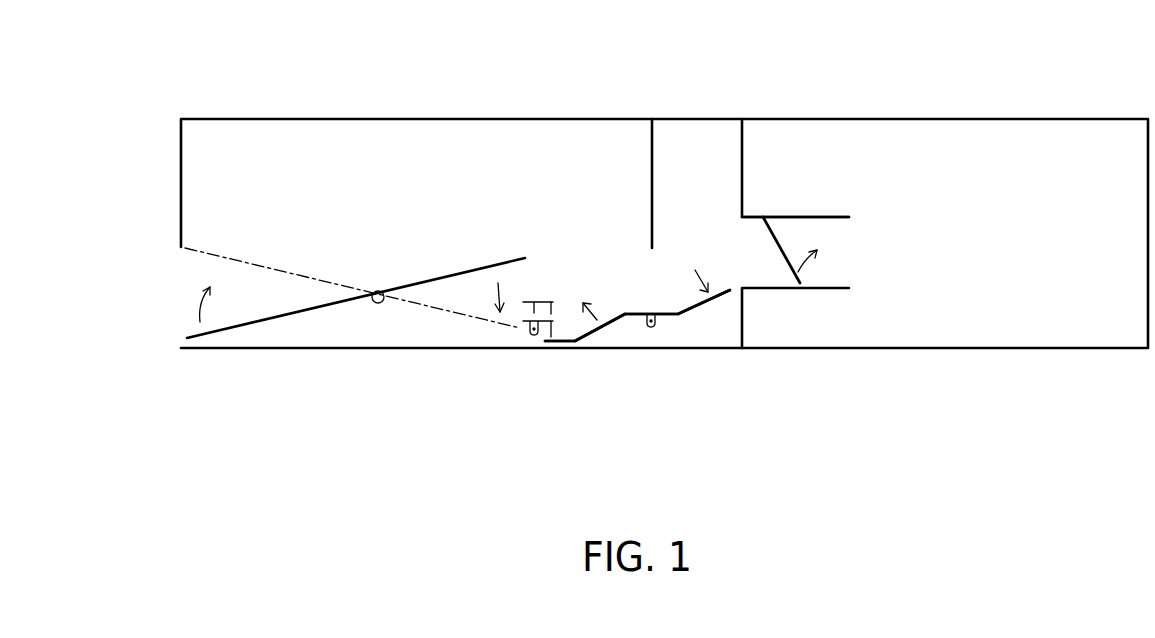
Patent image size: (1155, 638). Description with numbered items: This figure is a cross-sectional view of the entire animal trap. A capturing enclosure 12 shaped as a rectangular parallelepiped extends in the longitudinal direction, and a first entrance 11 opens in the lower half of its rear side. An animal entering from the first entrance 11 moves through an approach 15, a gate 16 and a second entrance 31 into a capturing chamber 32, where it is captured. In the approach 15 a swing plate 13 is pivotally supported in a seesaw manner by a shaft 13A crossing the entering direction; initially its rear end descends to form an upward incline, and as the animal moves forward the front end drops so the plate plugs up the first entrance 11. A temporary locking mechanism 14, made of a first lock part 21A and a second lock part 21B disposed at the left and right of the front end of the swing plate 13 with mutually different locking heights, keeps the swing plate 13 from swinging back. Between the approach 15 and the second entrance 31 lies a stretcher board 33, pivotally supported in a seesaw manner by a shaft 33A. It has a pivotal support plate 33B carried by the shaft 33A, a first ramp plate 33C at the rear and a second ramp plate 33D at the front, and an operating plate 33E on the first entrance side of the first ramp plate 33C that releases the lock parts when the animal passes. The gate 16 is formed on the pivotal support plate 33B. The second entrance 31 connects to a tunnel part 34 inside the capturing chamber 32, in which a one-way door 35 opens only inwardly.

The first entrance 11 is at (185, 272).
The capturing enclosure 12 is at (293, 117).
The swing plate 13 is at (273, 318).
The shaft 13A is at (378, 303).
The temporary locking mechanism 14 is at (623, 172).
The approach 15 is at (366, 202).
The gate 16 is at (653, 277).
The first lock part 21A is at (538, 292).
The second lock part 21B is at (557, 322).
The second entrance 31 is at (740, 248).
The capturing chamber 32 is at (989, 240).
The stretcher board 33 is at (627, 317).
The shaft 33A is at (651, 327).
The pivotal support plate 33B is at (670, 314).
The first ramp plate 33C is at (600, 328).
The second ramp plate 33D is at (700, 308).
The operating plate 33E is at (558, 341).
The tunnel part 34 is at (800, 215).
The one-way door 35 is at (778, 240).